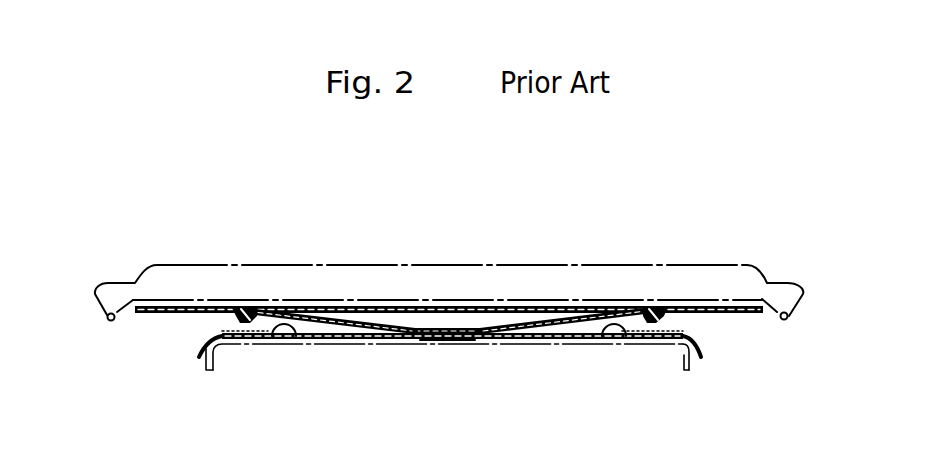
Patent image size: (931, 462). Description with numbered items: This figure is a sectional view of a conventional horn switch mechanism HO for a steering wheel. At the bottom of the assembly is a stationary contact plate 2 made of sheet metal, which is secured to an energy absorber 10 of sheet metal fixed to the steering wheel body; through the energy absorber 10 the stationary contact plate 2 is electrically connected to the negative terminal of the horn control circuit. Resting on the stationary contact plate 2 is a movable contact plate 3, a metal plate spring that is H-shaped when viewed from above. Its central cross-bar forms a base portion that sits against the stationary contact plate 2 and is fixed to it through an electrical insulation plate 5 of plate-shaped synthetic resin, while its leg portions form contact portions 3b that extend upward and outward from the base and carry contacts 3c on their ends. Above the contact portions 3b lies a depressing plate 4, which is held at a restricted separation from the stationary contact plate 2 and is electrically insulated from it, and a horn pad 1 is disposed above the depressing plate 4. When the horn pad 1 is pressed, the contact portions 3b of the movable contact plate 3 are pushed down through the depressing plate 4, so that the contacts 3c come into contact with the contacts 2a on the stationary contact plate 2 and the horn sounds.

The horn pad 1 is at (530, 285).
The stationary contact plate 2 is at (560, 341).
The contacts of the stationary contact plate 2a is at (300, 341).
The movable contact plate 3 is at (461, 328).
The contact portions 3b is at (320, 305).
The contacts 3c is at (250, 305).
The depressing plate 4 is at (388, 302).
The electrical insulation plate 5 is at (452, 341).
The energy absorber 10 is at (683, 362).
The horn switch mechanism HO is at (738, 348).